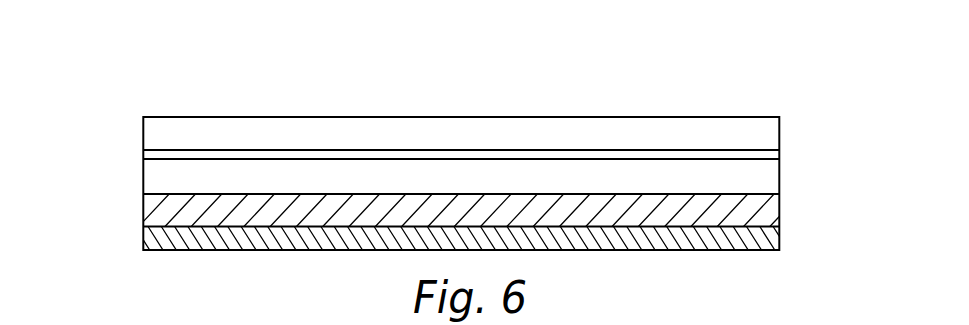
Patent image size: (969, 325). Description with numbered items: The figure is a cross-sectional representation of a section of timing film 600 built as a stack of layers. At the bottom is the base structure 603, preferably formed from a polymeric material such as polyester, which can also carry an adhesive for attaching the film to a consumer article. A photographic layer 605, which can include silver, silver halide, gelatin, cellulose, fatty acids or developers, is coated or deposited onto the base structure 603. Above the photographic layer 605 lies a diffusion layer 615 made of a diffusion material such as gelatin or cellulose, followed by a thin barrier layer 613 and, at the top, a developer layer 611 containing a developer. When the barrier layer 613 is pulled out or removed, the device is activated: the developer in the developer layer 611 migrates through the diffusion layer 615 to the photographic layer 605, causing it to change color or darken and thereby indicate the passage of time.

The section of timing film 600 is at (115, 63).
The developer layer 611 is at (779, 130).
The barrier layer 613 is at (779, 150).
The diffusion layer 615 is at (779, 173).
The photographic layer 605 is at (779, 203).
The base structure 603 is at (779, 237).